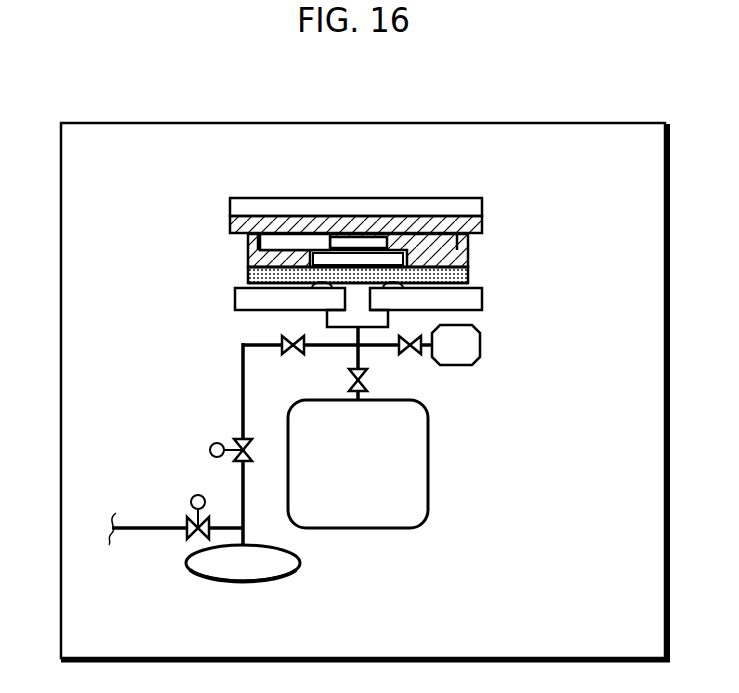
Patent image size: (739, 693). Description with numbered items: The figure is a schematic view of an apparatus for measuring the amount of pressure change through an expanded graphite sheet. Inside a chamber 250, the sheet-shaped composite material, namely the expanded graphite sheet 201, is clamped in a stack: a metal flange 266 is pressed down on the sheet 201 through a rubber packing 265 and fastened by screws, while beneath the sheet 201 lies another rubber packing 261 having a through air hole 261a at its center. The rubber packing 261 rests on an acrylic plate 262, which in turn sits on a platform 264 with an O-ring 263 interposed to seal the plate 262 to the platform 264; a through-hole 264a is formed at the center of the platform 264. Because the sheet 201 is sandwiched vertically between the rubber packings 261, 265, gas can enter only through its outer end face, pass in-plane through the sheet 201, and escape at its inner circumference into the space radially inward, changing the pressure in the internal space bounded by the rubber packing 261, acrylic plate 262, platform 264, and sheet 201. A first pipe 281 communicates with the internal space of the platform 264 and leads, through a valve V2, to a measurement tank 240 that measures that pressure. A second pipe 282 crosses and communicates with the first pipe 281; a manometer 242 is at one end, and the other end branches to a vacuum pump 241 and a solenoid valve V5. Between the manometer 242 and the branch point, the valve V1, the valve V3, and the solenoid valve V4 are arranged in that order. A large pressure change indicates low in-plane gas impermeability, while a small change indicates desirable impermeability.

The chamber 250 is at (575, 123).
The metal flange 266 is at (420, 202).
The rubber packing 265 is at (457, 228).
The expanded graphite sheet 201 is at (458, 240).
The rubber packing 261 is at (470, 255).
The through air hole 261a is at (317, 240).
The acrylic plate 262 is at (468, 273).
The O-ring 263 is at (323, 275).
The platform 264 is at (470, 302).
The through-hole 264a is at (353, 303).
The first pipe 281 is at (362, 360).
The second pipe 282 is at (242, 397).
The manometer 242 is at (482, 346).
The measurement tank 240 is at (415, 478).
The vacuum pump 241 is at (263, 583).
The valve V1 is at (416, 360).
The valve V2 is at (339, 381).
The valve V3 is at (281, 361).
The solenoid valve V4 is at (211, 451).
The solenoid valve V5 is at (177, 514).